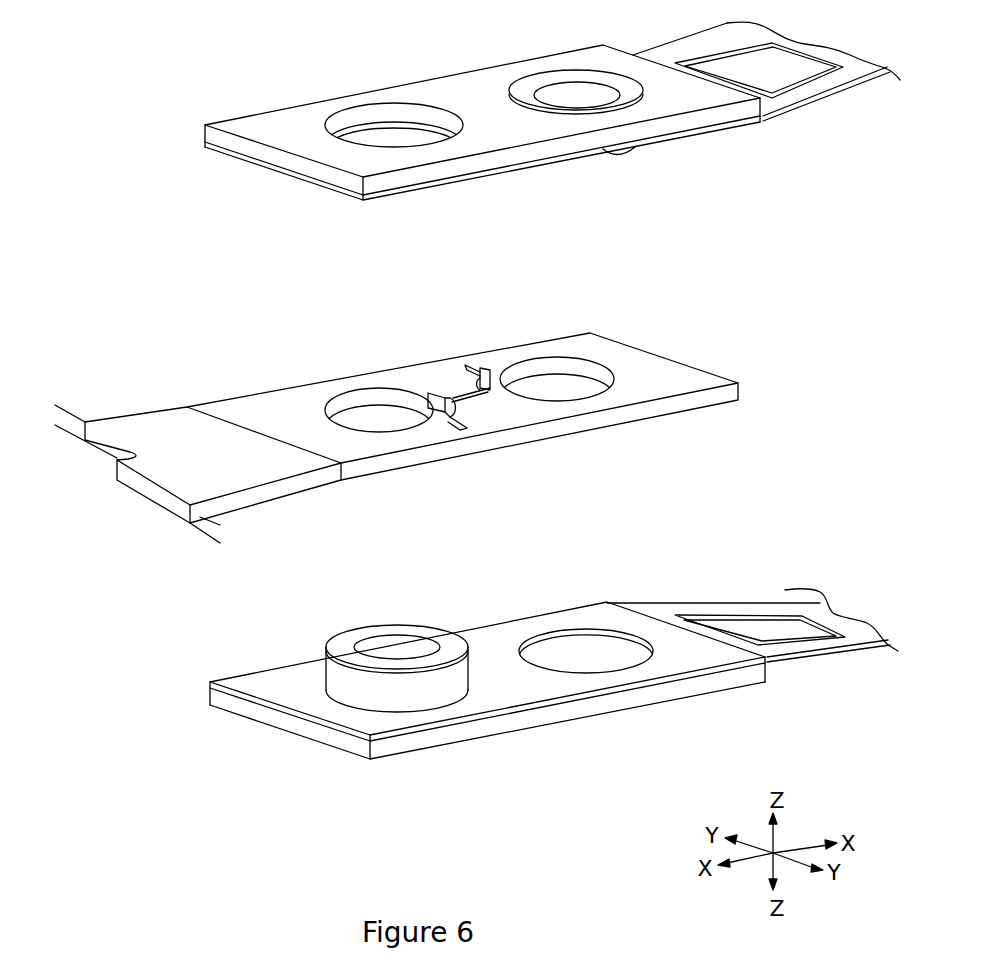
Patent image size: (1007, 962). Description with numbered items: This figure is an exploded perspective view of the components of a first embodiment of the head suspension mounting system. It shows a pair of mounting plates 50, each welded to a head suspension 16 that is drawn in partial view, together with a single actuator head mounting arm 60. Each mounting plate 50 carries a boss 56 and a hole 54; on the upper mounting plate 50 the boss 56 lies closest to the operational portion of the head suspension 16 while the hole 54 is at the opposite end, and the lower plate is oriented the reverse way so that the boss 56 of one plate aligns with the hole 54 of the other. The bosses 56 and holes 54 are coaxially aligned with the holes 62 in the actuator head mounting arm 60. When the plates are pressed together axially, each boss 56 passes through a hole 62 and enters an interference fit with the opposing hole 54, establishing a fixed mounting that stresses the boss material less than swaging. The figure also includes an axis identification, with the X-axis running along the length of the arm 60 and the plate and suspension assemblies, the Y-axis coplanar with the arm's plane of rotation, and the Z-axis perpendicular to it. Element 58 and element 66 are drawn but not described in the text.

The head suspension 16 is at (807, 105).
The mounting plate 50 is at (287, 128).
The hole 54 is at (382, 137).
The boss 56 is at (618, 155).
The ring 58 is at (570, 95).
The actuator head mounting arm 60 is at (248, 333).
The hole in actuator head mounting arm 62 is at (407, 432).
The clip 66 is at (428, 393).